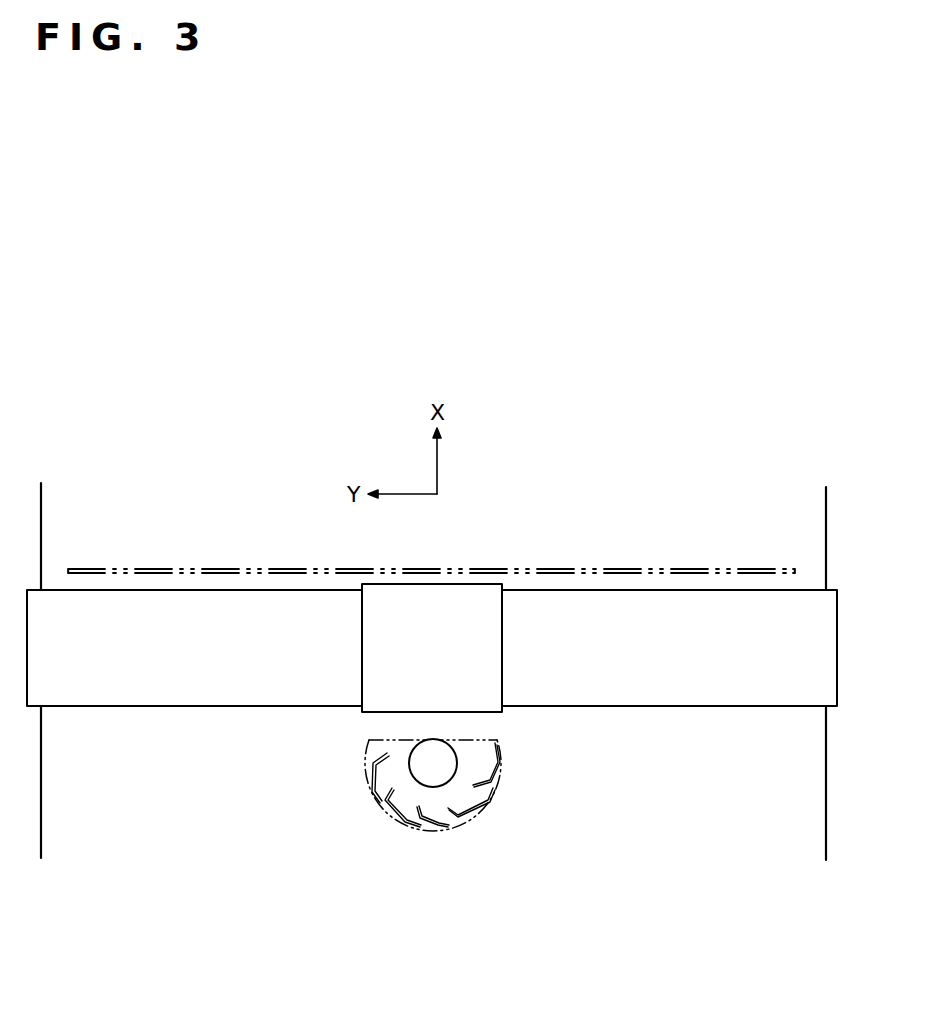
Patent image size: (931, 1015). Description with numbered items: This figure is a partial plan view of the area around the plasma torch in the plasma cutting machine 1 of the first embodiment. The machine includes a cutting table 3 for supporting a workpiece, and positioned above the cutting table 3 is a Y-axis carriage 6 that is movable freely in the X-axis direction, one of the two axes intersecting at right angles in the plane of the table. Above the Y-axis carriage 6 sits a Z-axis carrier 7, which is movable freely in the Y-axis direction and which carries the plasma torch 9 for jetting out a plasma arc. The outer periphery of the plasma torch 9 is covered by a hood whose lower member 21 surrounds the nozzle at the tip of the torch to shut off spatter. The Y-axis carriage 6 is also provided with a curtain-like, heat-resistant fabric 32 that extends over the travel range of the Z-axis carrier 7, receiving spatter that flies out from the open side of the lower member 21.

The plasma cutting machine 1 is at (455, 658).
The cutting table 3 is at (783, 790).
The Y-axis carriage 6 is at (807, 658).
The Z-axis carrier 7 is at (492, 653).
The plasma torch 9 is at (440, 757).
The lower member 21 is at (481, 814).
The heat-resistant fabric 32 is at (238, 566).